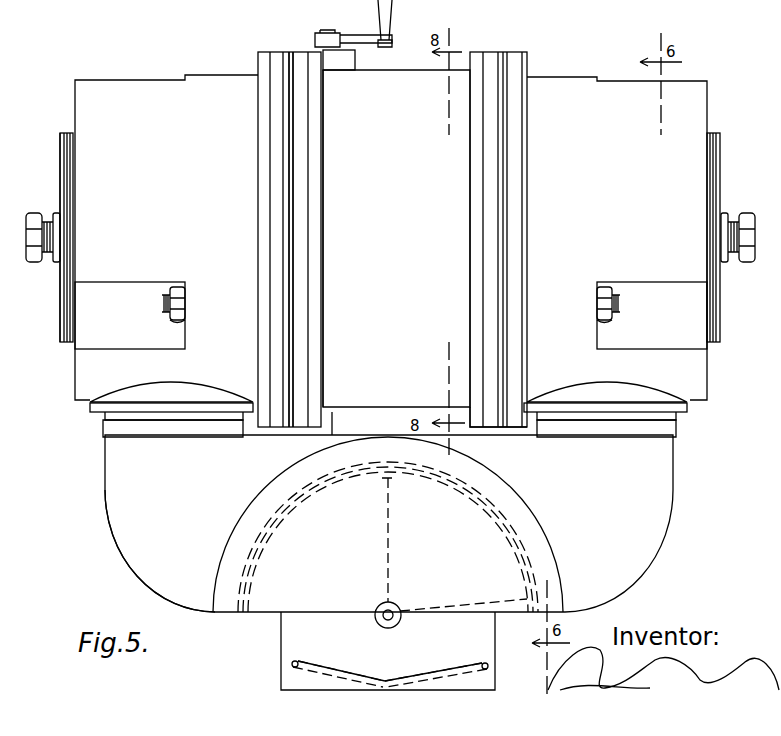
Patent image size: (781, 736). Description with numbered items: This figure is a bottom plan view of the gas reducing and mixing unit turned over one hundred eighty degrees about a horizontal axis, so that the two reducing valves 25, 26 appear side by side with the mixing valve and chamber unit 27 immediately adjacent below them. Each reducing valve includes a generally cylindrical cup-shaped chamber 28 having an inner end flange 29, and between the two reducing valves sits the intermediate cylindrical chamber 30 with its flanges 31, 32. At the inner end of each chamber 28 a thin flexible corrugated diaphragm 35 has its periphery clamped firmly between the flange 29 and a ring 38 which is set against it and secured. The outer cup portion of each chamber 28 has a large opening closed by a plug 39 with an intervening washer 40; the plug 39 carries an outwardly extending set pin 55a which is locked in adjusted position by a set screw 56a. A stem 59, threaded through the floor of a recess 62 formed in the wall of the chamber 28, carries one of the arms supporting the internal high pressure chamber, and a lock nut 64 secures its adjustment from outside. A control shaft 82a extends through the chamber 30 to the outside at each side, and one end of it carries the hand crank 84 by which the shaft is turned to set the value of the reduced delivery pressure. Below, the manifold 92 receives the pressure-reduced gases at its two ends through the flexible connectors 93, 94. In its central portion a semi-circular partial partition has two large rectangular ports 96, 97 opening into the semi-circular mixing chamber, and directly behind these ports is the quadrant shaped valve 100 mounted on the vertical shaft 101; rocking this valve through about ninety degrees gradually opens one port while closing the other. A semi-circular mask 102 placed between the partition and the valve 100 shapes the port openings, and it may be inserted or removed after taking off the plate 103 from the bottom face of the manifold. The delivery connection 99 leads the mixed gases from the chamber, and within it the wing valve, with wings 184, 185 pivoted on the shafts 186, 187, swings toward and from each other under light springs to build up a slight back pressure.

The reducing valve 25 is at (151, 73).
The reducing valve 26 is at (572, 71).
The mixing valve and chamber unit 27 is at (131, 577).
The cylindrical chamber 28 is at (382, 191).
The inner end flange 29 is at (284, 55).
The intermediate cylindrical chamber 30 is at (406, 65).
The flange 31 is at (477, 58).
The flange 32 is at (313, 397).
The corrugated diaphragm plate 35 is at (291, 55).
The ring 38 is at (493, 412).
The plug 39 is at (60, 143).
The washer 40 is at (67, 135).
The set pin 55a is at (49, 248).
The set screw 56a is at (55, 218).
The stem 59 is at (164, 302).
The recess 62 is at (83, 284).
The lock nut 64 is at (174, 322).
The control shaft 82a is at (332, 422).
The hand crank 84 is at (378, 10).
The manifold 92 is at (389, 523).
The flexible connector 93 is at (665, 413).
The flexible connector 94 is at (105, 418).
The rectangular port 96 is at (527, 536).
The rectangular port 97 is at (272, 514).
The delivery connection 99 is at (281, 636).
The quadrant shaped valve 100 is at (492, 530).
The vertical shaft 101 is at (401, 609).
The semi-circular mask 102 is at (487, 492).
The plate 103 is at (503, 505).
The wing 184 is at (447, 678).
The wing 185 is at (334, 676).
The shaft 186 is at (489, 666).
The shaft 187 is at (292, 665).